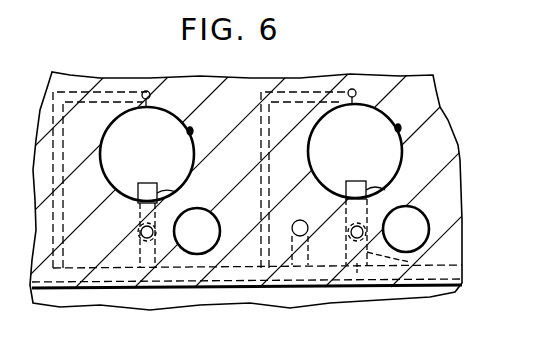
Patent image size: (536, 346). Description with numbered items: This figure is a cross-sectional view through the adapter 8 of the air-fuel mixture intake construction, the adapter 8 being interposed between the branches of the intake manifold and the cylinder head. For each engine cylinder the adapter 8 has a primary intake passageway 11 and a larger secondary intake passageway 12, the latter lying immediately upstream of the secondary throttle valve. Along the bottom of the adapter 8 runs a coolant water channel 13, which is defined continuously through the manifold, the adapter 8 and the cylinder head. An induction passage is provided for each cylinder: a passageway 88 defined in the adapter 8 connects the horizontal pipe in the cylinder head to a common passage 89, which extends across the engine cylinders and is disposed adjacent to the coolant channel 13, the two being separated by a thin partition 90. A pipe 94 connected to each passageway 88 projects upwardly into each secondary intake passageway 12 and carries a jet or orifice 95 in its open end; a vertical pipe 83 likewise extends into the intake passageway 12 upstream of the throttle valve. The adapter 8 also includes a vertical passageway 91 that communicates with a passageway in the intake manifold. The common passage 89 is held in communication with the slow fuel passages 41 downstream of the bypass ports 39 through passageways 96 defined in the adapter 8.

The adapter 8 is at (461, 142).
The primary intake passageway 11 is at (214, 222).
The secondary intake passageway 12 is at (190, 131).
The coolant water channel 13 is at (440, 300).
The bypass ports 39 is at (146, 107).
The slow fuel passage 41 is at (152, 94).
The vertical pipe 83 is at (140, 228).
The passageway 88 is at (143, 266).
The common passage 89 is at (462, 271).
The partition 90 is at (466, 284).
The vertical passageway 91 is at (305, 240).
The pipe 94 is at (176, 192).
The jet or orifice 95 is at (152, 183).
The passageways 96 is at (59, 185).